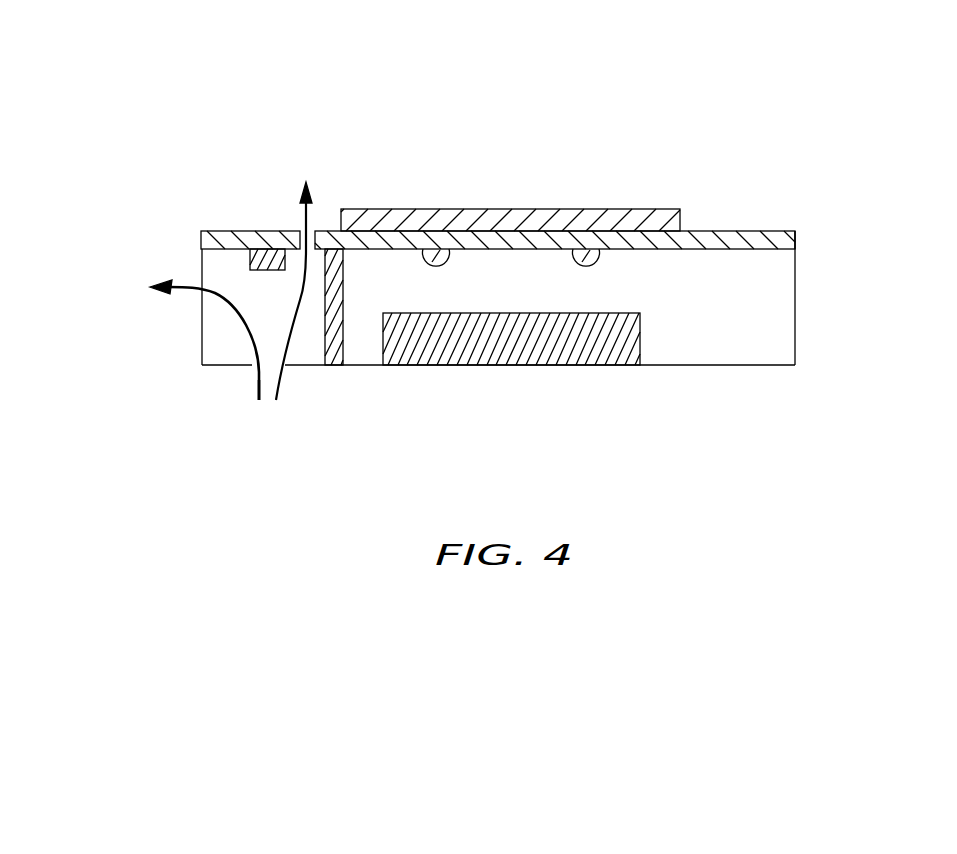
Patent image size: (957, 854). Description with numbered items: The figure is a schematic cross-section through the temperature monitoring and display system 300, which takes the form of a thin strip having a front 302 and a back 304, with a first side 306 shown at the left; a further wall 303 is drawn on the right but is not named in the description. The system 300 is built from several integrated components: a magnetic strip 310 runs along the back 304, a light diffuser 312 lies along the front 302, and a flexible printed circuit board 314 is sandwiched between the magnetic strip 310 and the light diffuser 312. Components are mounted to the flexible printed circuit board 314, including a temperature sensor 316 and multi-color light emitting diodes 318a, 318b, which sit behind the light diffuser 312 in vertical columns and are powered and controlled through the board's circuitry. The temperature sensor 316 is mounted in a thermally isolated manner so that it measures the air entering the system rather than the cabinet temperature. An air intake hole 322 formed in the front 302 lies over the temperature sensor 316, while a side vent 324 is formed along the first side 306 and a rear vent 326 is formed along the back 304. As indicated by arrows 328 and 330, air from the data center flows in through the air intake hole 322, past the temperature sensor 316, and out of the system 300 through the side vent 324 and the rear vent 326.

The temperature monitoring and display system 300 is at (745, 70).
The front 302 is at (720, 366).
The housing side wall 303 is at (797, 312).
The back 304 is at (707, 231).
The first side 306 is at (201, 352).
The magnetic strip 310 is at (622, 209).
The light diffuser 312 is at (482, 366).
The flexible printed circuit board 314 is at (799, 240).
The temperature sensor 316 is at (250, 259).
The light emitting diode 318a is at (449, 264).
The light emitting diode 318b is at (599, 264).
The air intake hole 322 is at (252, 366).
The side vent 324 is at (200, 300).
The rear vent 326 is at (312, 227).
The arrow 328 is at (257, 395).
The arrow 330 is at (278, 384).